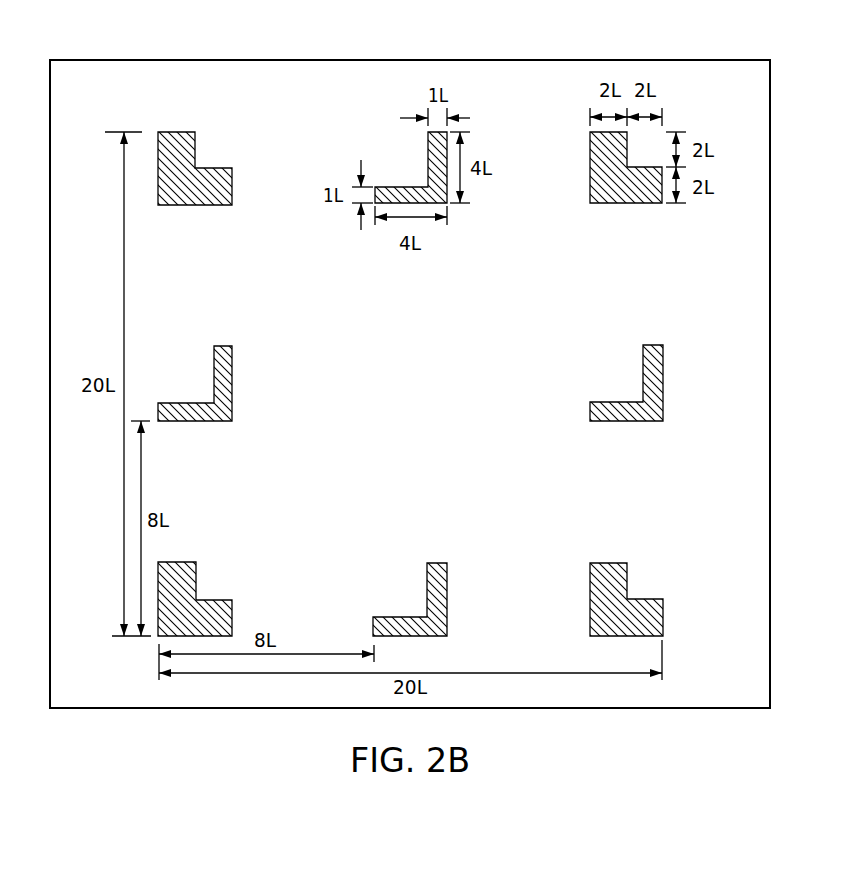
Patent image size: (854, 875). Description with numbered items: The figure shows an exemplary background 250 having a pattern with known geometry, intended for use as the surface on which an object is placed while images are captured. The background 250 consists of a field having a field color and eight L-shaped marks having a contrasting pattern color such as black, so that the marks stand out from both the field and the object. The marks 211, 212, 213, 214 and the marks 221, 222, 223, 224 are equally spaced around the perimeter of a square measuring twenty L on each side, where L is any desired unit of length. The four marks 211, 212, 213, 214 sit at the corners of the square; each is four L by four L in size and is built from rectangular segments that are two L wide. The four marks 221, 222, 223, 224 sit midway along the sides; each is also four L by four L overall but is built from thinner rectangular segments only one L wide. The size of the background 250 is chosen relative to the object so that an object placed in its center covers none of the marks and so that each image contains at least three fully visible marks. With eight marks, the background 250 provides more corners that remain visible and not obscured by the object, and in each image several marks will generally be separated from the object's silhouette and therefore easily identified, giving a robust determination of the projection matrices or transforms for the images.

The L-shaped mark 211 is at (213, 600).
The L-shaped mark 212 is at (590, 580).
The L-shaped mark 213 is at (178, 205).
The L-shaped mark 214 is at (605, 203).
The L-shaped mark 221 is at (413, 617).
The L-shaped mark 222 is at (197, 403).
The L-shaped mark 223 is at (627, 402).
The L-shaped mark 224 is at (410, 187).
The background 250 is at (393, 394).